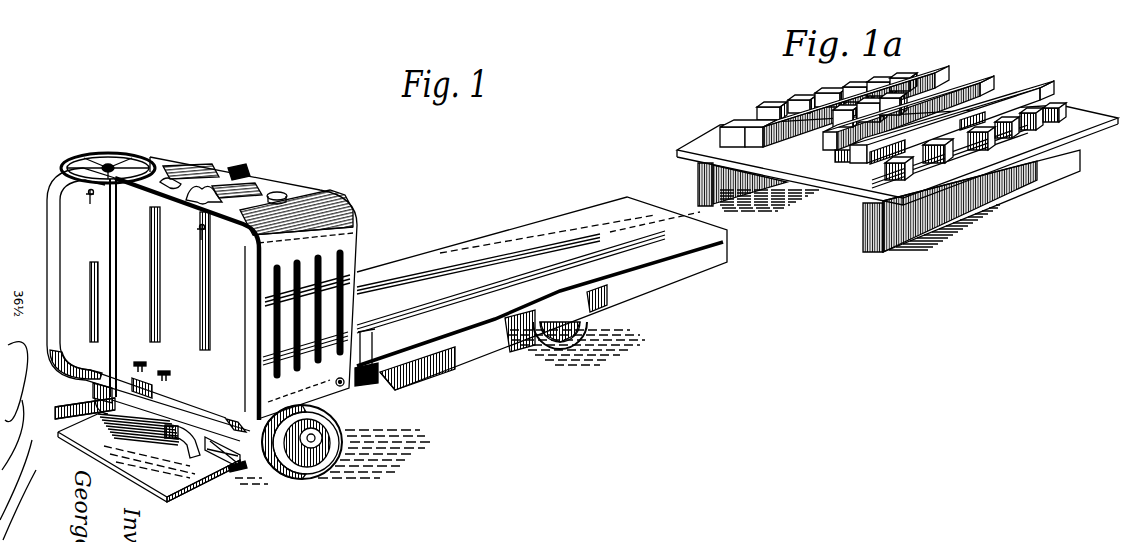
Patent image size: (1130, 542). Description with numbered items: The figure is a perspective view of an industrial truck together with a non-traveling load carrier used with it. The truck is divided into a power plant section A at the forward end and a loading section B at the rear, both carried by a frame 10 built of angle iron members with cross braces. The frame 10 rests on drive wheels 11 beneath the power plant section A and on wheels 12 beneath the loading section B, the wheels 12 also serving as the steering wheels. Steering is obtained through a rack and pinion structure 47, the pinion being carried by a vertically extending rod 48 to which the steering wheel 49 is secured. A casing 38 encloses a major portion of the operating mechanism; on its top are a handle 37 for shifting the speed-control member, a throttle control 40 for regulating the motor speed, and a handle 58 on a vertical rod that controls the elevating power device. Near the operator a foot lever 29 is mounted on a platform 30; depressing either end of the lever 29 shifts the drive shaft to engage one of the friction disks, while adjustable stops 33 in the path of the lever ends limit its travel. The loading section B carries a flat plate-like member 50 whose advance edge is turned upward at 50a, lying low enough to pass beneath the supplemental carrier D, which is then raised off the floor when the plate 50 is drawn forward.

In FIG. 1, the power plant section A is at (202, 280).
In FIG. 1, the loading section B is at (542, 283).
In FIG. 1A, the supplemental carrier D is at (855, 187).
In FIG. 1, the frame 10 is at (88, 378).
In FIG. 1, the drive wheels 11 is at (56, 350).
In FIG. 1, the wheels 12 is at (560, 345).
In FIG. 1, the foot lever 29 is at (230, 470).
In FIG. 1, the platform 30 is at (128, 447).
In FIG. 1, the adjustable stops 33 is at (170, 445).
In FIG. 1, the handle 37 is at (207, 203).
In FIG. 1, the casing 38 is at (193, 160).
In FIG. 1, the throttle control 40 is at (250, 171).
In FIG. 1, the rack and pinion structure 47 is at (95, 430).
In FIG. 1, the vertically extending rod 48 is at (110, 240).
In FIG. 1, the steering wheel 49 is at (107, 150).
In FIG. 1, the flat plate-like member 50 is at (580, 215).
In FIG. 1, the upturned advance edge 50a is at (385, 327).
In FIG. 1, the handle 58 is at (166, 178).